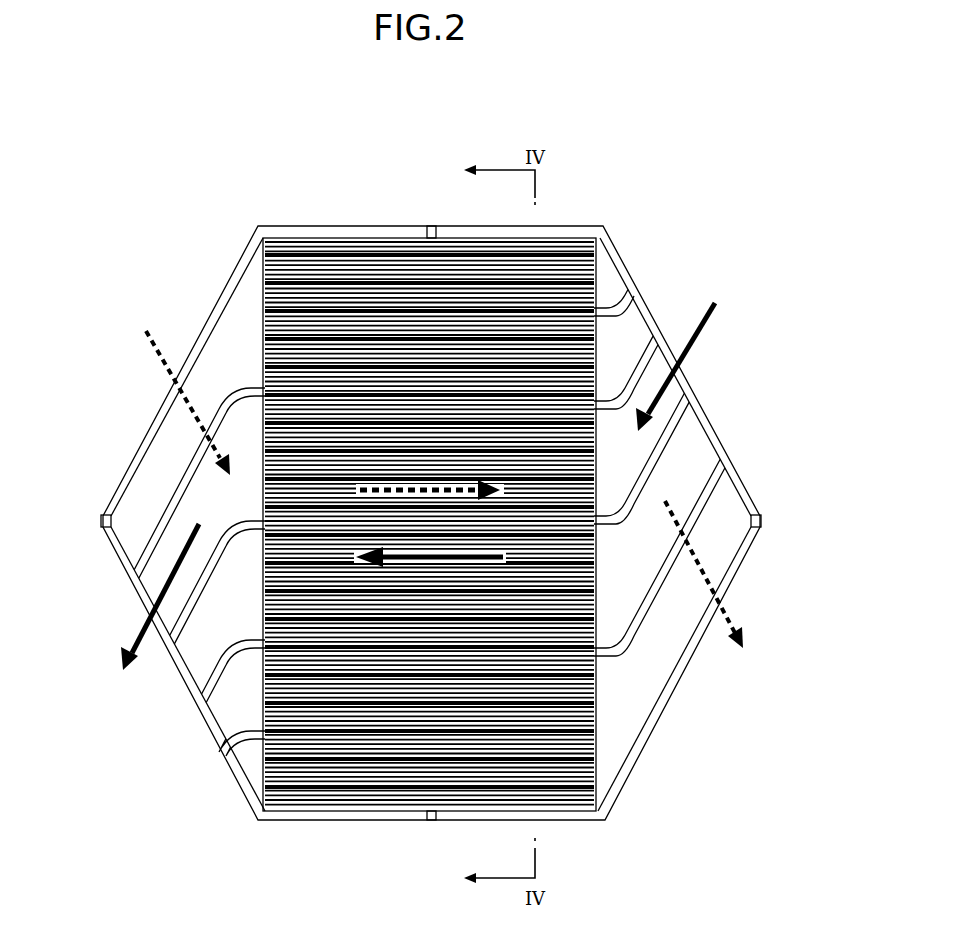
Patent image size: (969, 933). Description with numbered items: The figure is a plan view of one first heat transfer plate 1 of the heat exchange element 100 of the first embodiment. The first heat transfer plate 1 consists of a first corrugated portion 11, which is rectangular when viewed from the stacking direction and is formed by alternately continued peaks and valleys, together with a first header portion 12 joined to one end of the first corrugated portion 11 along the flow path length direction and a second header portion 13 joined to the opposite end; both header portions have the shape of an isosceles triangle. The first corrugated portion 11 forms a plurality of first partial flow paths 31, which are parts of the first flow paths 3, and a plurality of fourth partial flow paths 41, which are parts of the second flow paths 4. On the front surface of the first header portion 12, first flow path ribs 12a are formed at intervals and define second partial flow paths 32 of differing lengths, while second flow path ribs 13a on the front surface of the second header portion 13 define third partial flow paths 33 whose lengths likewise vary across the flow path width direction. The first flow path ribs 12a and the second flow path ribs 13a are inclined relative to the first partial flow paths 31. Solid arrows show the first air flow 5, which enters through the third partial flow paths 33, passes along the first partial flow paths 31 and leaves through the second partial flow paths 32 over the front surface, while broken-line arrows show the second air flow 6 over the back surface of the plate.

The heat exchange element 100 is at (680, 148).
The first heat transfer plate 1 is at (614, 218).
The first corrugated portion 11 is at (350, 253).
The first header portion 12 is at (208, 290).
The first flow path ribs 12a is at (150, 534).
The second header portion 13 is at (621, 257).
The second flow path ribs 13a is at (613, 303).
The first flow paths 3 is at (434, 481).
The first partial flow paths 31 is at (302, 257).
The second partial flow paths 32 is at (143, 470).
The third partial flow paths 33 is at (720, 497).
The second flow paths 4 is at (429, 443).
The fourth partial flow paths 41 is at (323, 255).
The first air flow 5 is at (128, 633).
The second air flow 6 is at (148, 338).